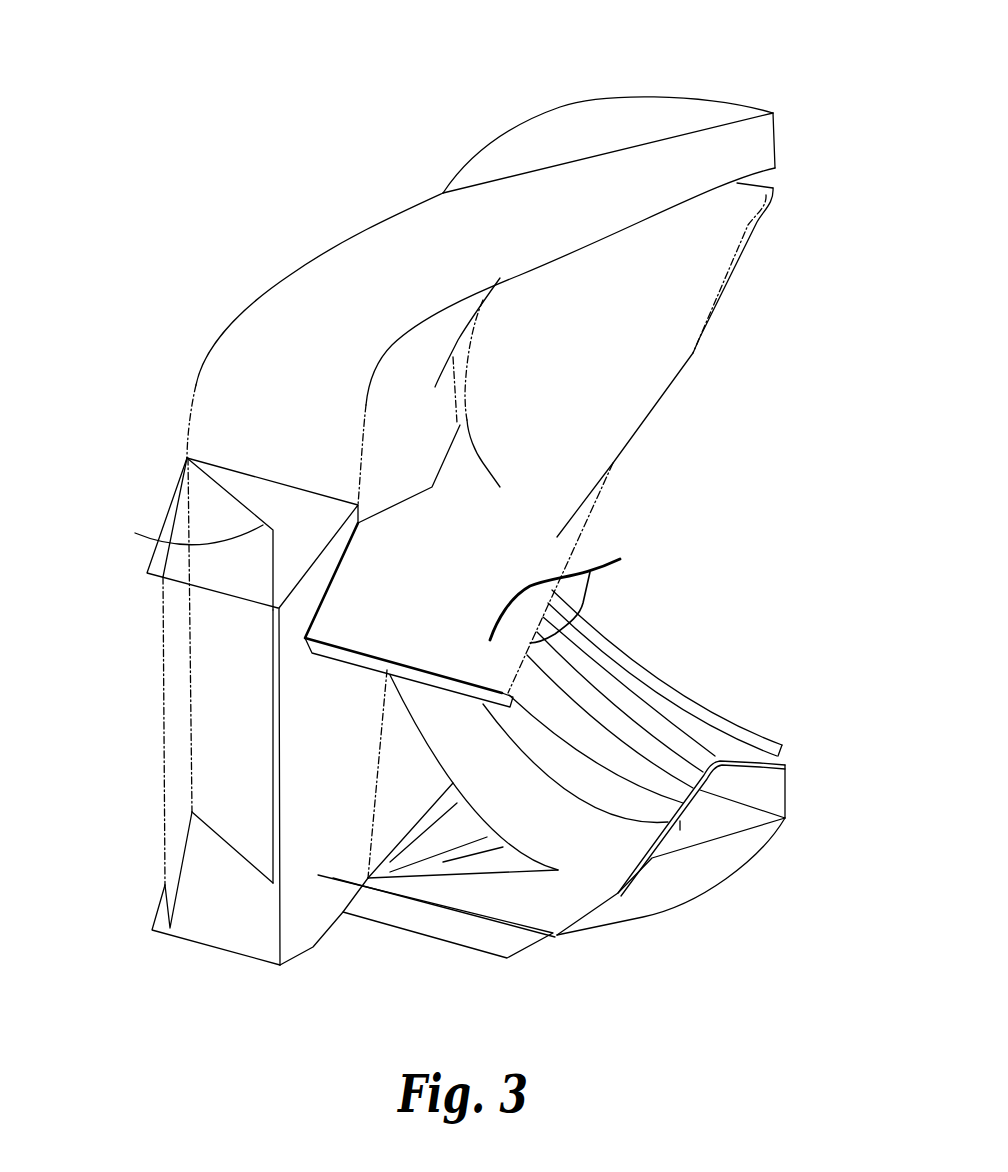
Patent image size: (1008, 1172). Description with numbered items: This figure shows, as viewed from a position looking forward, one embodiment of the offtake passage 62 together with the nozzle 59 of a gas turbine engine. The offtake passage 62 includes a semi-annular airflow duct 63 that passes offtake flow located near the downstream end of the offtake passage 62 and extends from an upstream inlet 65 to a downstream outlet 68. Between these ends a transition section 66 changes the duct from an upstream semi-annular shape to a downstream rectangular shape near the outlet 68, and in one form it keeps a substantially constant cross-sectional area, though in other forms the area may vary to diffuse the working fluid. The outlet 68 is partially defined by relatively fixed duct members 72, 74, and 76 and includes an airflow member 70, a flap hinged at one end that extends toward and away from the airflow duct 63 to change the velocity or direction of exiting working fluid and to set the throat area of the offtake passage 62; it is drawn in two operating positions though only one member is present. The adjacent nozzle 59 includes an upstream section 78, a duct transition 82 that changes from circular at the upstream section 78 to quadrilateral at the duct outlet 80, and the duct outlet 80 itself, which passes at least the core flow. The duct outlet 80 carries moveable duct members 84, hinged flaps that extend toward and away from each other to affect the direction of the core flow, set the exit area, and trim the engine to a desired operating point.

The nozzle 59 is at (796, 887).
The offtake passage 62 is at (148, 170).
The airflow duct 63 is at (205, 100).
The upstream inlet 65 is at (632, 92).
The transition section 66 is at (325, 247).
The downstream outlet 68 is at (157, 986).
The airflow member 70 is at (150, 533).
The duct member 72 is at (167, 502).
The duct member 74 is at (180, 937).
The duct member 76 is at (275, 928).
The upstream section 78 is at (673, 680).
The duct outlet 80 is at (563, 973).
The duct transition 82 is at (645, 917).
The moveable duct member 84 is at (480, 1020).